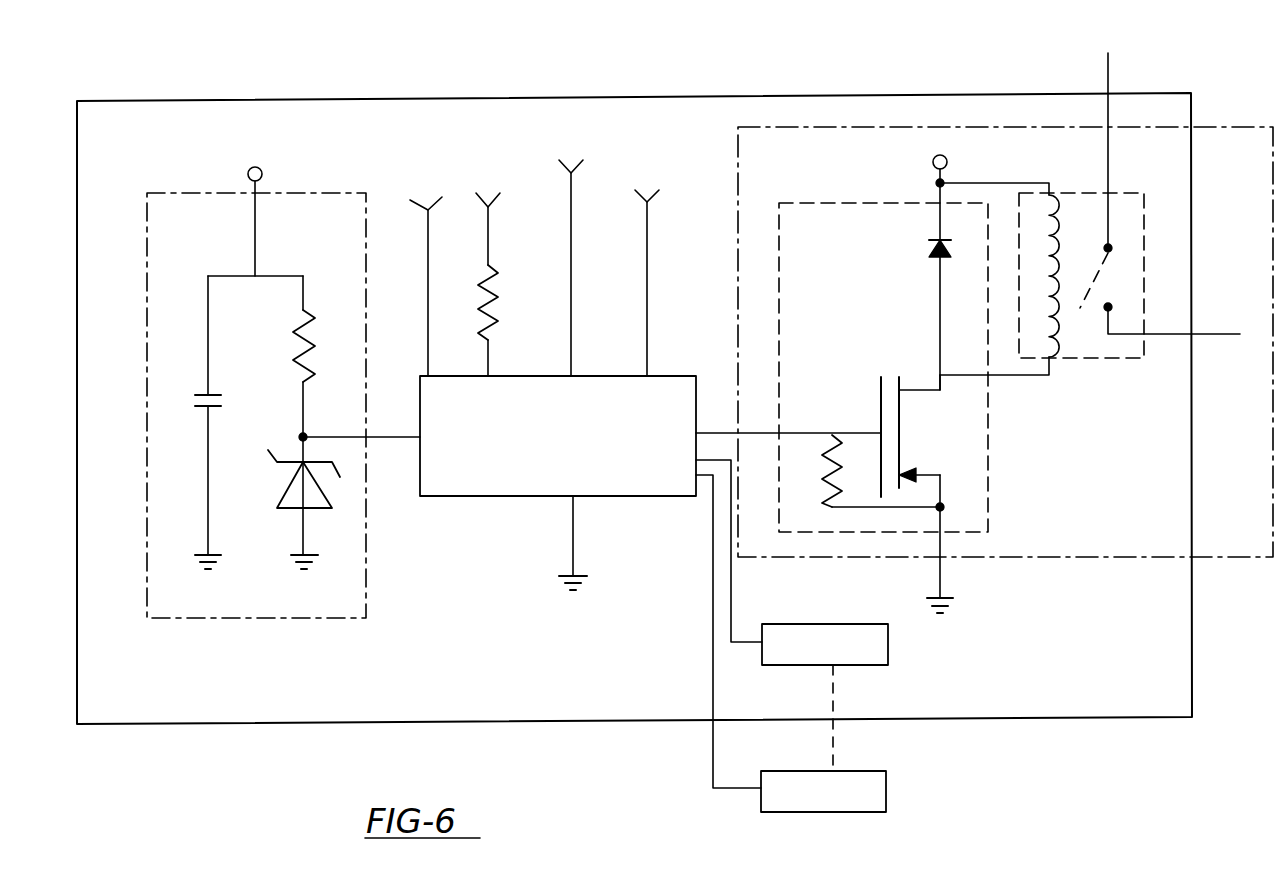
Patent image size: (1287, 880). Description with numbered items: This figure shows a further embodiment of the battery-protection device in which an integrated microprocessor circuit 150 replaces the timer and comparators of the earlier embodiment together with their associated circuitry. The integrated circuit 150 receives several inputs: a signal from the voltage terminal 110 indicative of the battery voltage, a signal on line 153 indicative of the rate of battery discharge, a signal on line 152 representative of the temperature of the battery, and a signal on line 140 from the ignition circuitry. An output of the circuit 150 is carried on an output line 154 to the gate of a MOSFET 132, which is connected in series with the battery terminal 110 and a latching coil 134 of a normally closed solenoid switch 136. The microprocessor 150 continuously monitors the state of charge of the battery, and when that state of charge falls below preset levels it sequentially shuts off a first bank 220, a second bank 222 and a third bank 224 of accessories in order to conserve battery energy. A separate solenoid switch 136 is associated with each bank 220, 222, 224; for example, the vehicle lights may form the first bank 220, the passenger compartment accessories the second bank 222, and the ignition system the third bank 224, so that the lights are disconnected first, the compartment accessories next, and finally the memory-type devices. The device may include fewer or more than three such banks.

The battery terminal 110 is at (571, 193).
The MOSFET 132 is at (940, 458).
The latching coil 134 is at (1049, 247).
The solenoid switch 136 is at (1120, 268).
The line from ignition circuitry 140 is at (488, 237).
The integrated microprocessor circuit 150 is at (517, 497).
The line 152 is at (647, 268).
The line 153 is at (428, 222).
The output line 154 is at (760, 432).
The first bank of accessories 220 is at (1213, 127).
The second bank of accessories 222 is at (855, 665).
The third bank of accessories 224 is at (886, 797).